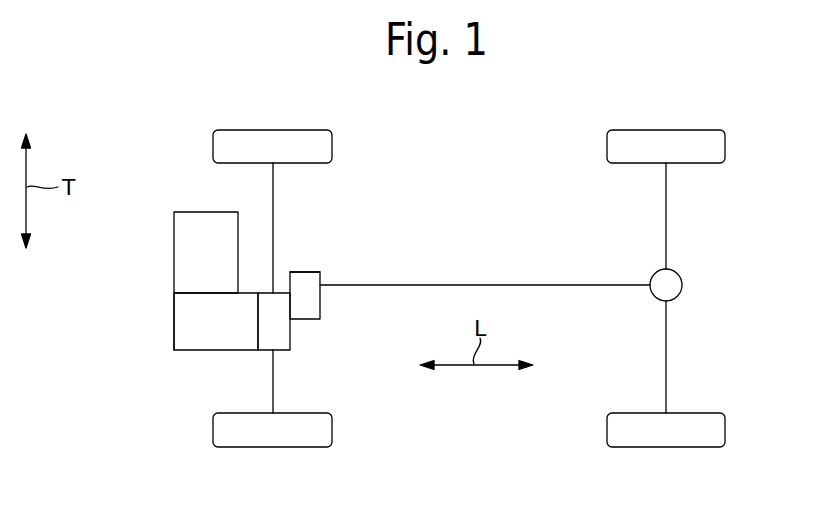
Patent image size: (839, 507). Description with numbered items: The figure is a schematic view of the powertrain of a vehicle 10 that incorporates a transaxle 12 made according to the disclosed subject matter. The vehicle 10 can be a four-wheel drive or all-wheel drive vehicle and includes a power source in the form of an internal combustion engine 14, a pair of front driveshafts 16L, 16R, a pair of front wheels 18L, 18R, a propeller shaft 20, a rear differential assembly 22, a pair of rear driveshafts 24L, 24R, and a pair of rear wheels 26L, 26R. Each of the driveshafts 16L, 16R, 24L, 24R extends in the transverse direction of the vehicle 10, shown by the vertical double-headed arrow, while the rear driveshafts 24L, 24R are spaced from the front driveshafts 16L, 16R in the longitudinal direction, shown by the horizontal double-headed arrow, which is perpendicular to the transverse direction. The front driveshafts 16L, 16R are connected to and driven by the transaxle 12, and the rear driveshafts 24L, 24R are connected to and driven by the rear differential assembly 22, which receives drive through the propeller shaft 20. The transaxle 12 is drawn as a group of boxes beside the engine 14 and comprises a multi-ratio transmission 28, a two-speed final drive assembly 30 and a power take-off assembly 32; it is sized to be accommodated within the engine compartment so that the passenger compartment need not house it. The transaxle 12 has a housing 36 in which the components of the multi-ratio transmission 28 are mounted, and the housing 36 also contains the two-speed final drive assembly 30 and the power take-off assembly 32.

The vehicle 10 is at (126, 262).
The transaxle 12 is at (151, 307).
The internal combustion engine 14 is at (174, 225).
The front driveshaft 16R is at (274, 211).
The front driveshaft 16L is at (274, 381).
The front wheel 18R is at (333, 145).
The front wheel 18L is at (333, 428).
The propeller shaft 20 is at (503, 285).
The rear differential assembly 22 is at (683, 283).
The rear driveshaft 24R is at (667, 211).
The rear driveshaft 24L is at (667, 361).
The rear wheel 26R is at (726, 145).
The rear wheel 26L is at (726, 428).
The multi-ratio transmission 28 is at (208, 337).
The two-speed final drive assembly 30 is at (275, 337).
The power take-off assembly 32 is at (307, 305).
The housing 36 is at (174, 338).